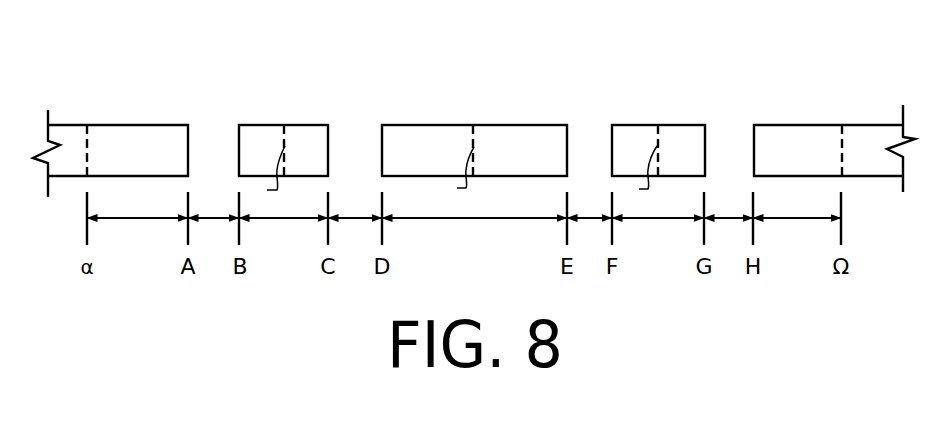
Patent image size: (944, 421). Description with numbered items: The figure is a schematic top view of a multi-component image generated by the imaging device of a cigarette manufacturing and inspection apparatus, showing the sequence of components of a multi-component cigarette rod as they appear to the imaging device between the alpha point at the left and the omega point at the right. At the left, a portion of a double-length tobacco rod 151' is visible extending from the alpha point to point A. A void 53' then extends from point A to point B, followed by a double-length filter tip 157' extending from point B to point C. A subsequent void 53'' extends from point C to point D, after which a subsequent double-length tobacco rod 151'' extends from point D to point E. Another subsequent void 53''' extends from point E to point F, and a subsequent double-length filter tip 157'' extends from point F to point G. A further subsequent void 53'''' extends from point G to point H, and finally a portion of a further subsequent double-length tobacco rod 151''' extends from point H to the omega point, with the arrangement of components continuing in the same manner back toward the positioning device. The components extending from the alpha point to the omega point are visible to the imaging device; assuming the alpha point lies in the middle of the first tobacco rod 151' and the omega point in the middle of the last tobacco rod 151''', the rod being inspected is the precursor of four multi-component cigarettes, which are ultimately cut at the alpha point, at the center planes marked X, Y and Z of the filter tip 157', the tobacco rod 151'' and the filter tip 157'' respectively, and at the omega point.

The double-length tobacco rod 151' is at (110, 129).
The void 53' is at (213, 129).
The double-length filter tip 157' is at (283, 129).
The void 53'' is at (357, 129).
The double-length tobacco rod 151'' is at (474, 129).
The void 53''' is at (593, 129).
The double-length filter tip 157'' is at (658, 129).
The void 53'''' is at (734, 129).
The double-length tobacco rod 151''' is at (834, 129).